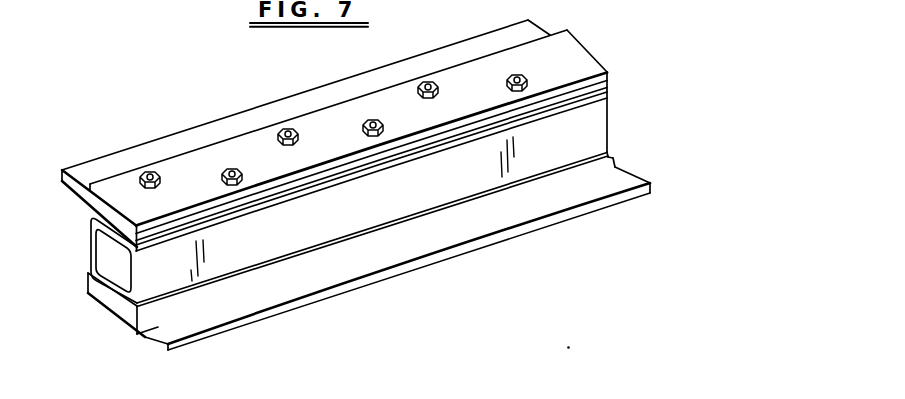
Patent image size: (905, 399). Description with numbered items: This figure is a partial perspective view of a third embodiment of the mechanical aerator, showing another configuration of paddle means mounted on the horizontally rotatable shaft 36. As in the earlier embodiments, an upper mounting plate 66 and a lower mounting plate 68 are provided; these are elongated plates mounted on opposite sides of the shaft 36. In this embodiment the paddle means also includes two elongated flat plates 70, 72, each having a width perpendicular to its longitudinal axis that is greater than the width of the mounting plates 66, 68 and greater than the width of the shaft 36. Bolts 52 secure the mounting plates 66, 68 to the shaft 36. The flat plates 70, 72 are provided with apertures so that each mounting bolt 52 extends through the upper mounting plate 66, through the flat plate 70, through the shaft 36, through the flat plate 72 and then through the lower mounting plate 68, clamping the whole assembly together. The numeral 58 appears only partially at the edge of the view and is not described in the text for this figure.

The shaft 36 is at (349, 197).
The bolts 52 is at (288, 128).
The member (partially shown) 58 is at (100, 7).
The upper mounting plate 66 is at (578, 60).
The lower mounting plate 68 is at (127, 322).
The elongated flat plate 70 is at (128, 155).
The elongated flat plate 72 is at (558, 202).